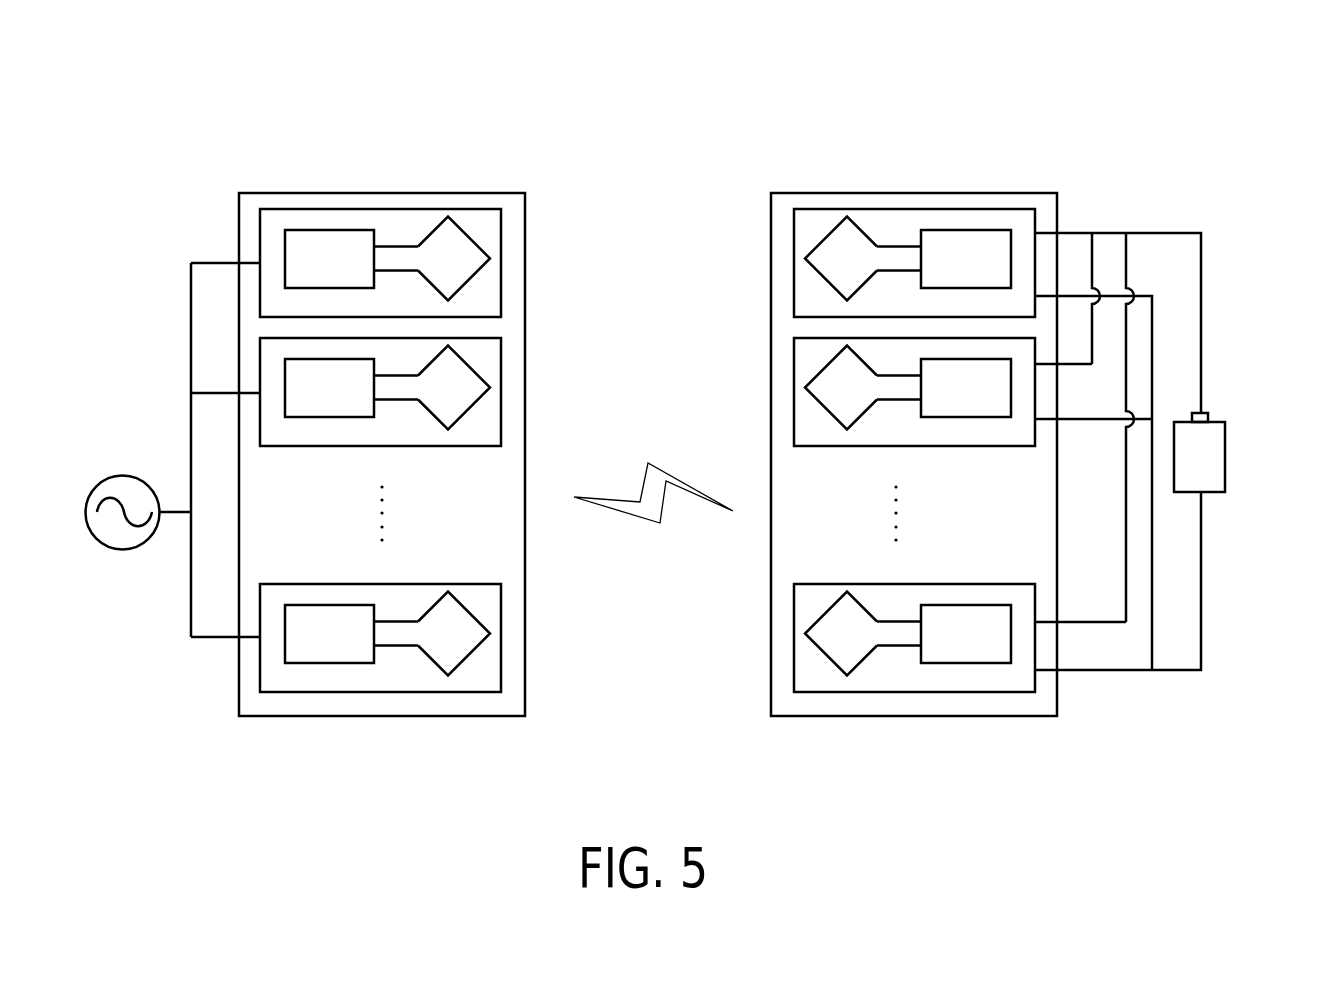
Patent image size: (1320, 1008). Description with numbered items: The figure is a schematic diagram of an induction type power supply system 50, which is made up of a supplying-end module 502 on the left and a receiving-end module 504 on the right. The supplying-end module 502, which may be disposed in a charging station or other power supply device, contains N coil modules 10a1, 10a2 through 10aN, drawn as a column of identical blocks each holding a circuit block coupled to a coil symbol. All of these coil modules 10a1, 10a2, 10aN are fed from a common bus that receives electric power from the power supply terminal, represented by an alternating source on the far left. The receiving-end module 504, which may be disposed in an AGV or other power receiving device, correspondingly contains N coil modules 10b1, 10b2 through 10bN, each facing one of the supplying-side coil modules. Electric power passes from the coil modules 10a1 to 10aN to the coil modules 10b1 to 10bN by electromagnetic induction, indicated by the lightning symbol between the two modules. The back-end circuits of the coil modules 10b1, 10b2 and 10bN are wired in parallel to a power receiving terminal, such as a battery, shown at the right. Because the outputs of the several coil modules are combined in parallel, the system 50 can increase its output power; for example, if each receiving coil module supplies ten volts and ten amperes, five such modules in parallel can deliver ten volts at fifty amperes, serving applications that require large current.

The induction type power supply system 50 is at (1138, 90).
The supplying-end module 502 is at (270, 193).
The receiving-end module 504 is at (1023, 193).
The coil module 10a1 is at (501, 229).
The coil module 10a2 is at (501, 357).
The coil module 10aN is at (501, 600).
The coil module 10b1 is at (794, 229).
The coil module 10b2 is at (794, 357).
The coil module 10bN is at (794, 601).